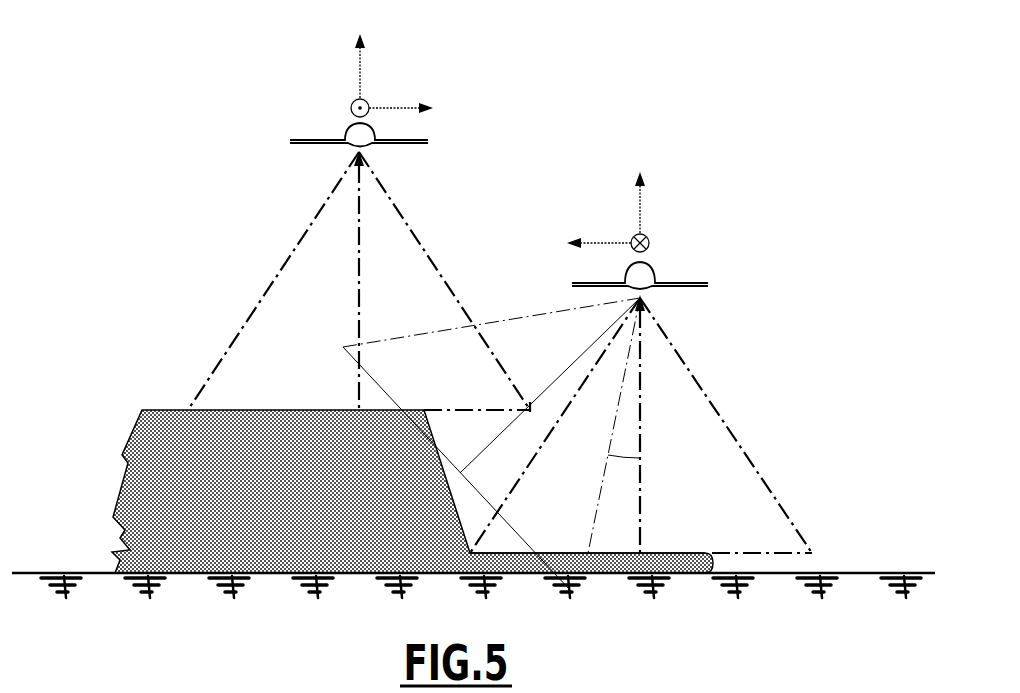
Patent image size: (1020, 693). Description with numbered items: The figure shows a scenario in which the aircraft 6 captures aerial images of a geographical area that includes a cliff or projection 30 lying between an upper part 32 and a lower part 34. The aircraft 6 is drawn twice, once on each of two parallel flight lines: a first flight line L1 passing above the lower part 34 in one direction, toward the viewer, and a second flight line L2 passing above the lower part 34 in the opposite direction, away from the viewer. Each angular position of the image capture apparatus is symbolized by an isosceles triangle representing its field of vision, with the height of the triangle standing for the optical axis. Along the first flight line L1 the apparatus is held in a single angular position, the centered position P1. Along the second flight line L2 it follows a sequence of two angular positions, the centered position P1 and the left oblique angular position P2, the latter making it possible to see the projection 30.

The aircraft 6 is at (298, 126).
The first flight line L1 is at (350, 160).
The second flight line L2 is at (652, 300).
The centered position P1 is at (260, 298).
The left oblique angular position P2 is at (645, 456).
The projection 30 is at (455, 505).
The upper part 32 is at (162, 410).
The lower part 34 is at (672, 553).